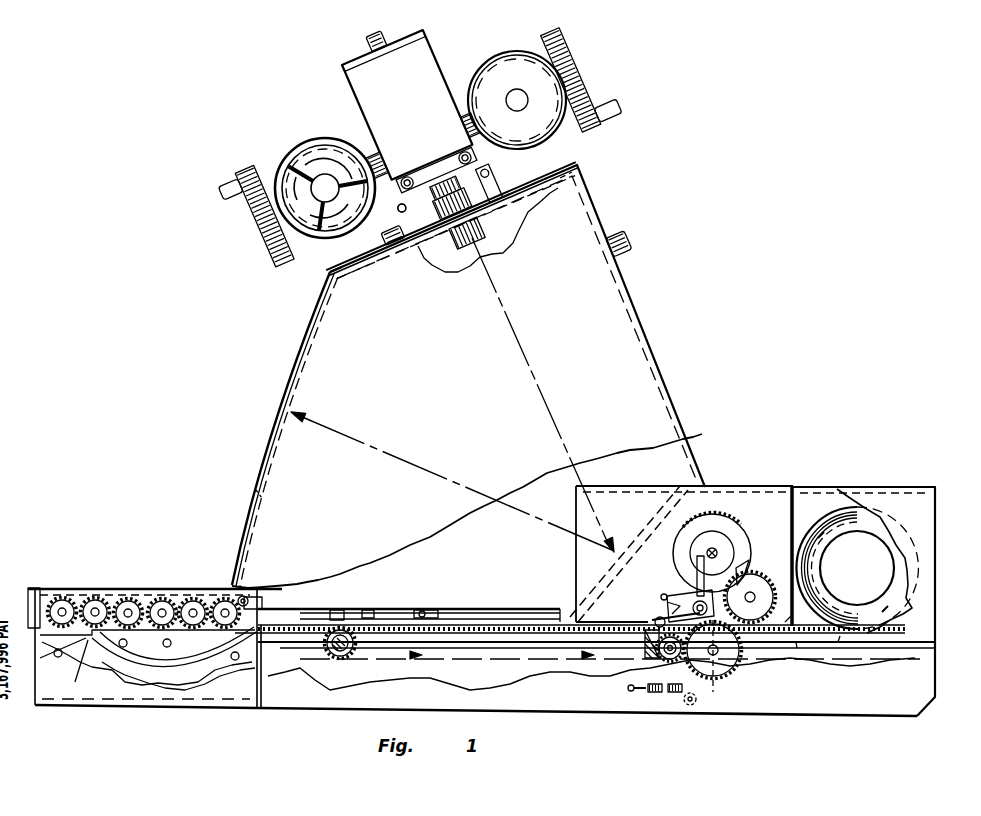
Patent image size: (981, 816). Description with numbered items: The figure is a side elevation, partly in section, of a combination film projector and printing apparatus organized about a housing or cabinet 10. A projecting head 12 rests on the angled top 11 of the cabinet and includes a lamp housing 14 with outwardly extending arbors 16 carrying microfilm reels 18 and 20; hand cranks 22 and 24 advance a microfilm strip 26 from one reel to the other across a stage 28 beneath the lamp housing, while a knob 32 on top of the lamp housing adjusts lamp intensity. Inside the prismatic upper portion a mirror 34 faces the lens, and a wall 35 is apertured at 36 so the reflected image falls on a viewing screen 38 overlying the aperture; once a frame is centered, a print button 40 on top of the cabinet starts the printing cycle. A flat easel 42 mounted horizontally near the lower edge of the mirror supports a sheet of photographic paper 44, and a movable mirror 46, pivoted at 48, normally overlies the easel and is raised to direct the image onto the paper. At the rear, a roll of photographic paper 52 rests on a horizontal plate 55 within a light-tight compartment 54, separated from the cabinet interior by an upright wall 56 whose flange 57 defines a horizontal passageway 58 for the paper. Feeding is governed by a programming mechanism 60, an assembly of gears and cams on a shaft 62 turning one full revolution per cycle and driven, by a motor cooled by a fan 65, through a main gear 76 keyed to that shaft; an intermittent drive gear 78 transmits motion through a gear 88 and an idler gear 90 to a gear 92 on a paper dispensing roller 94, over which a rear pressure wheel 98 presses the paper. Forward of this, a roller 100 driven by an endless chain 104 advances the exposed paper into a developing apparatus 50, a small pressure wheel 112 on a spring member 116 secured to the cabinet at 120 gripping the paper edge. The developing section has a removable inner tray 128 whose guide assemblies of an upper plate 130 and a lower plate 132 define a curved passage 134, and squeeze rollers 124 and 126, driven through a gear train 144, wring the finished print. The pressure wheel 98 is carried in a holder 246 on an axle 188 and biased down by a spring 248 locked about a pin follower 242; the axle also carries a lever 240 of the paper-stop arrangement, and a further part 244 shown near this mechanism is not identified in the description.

The housing 10 is at (650, 335).
The angled top 11 is at (564, 177).
The projecting head 12 is at (592, 78).
The lamp housing 14 is at (422, 127).
The arbors 16 is at (272, 186).
The microfilm reel 18 is at (332, 197).
The microfilm reel 20 is at (524, 87).
The hand crank 22 is at (272, 246).
The hand crank 24 is at (565, 50).
The microfilm strip 26 is at (380, 222).
The stage 28 is at (498, 192).
The knob 32 is at (370, 44).
The mirror 34 is at (651, 509).
The wall 35 is at (322, 289).
The aperture 36 is at (262, 494).
The viewing screen 38 is at (286, 390).
The print button 40 is at (385, 252).
The easel 42 is at (500, 642).
The sheet of photographic paper 44 is at (497, 609).
The movable mirror 46 is at (465, 609).
The pivot 48 is at (262, 598).
The developing apparatus 50 is at (134, 585).
The roll of photographic paper 52 is at (833, 514).
The light-tight compartment 54 is at (884, 490).
The horizontal plate 55 is at (838, 642).
The wall 56 is at (790, 507).
The flange 57 is at (793, 632).
The horizontal passageway 58 is at (797, 648).
The programming mechanism 60 is at (731, 504).
The shaft 62 is at (705, 550).
The fan 65 is at (736, 540).
The main gear 76 is at (698, 526).
The intermittent drive gear 78 is at (690, 579).
The gear 88 is at (770, 568).
The idler gear 90 is at (735, 668).
The gear 92 is at (657, 652).
The paper dispensing roller 94 is at (645, 645).
The pressure wheel 98 is at (662, 622).
The roller 100 is at (325, 650).
The endless chain 104 is at (448, 665).
The pressure wheel 112 is at (337, 609).
The spring member 116 is at (370, 609).
The securing point 120 is at (422, 609).
The squeeze roller 124 is at (88, 597).
The squeeze roller 126 is at (60, 597).
The removable inner tray 128 is at (33, 646).
The upper plate 130 is at (104, 597).
The lower plate 132 is at (76, 664).
The passage 134 is at (128, 662).
The gear train 144 is at (181, 600).
The axle 188 is at (667, 612).
The lever 240 is at (698, 700).
The pin follower 242 is at (692, 598).
The screw 244 is at (662, 690).
The holder 246 is at (667, 600).
The spring 248 is at (661, 593).